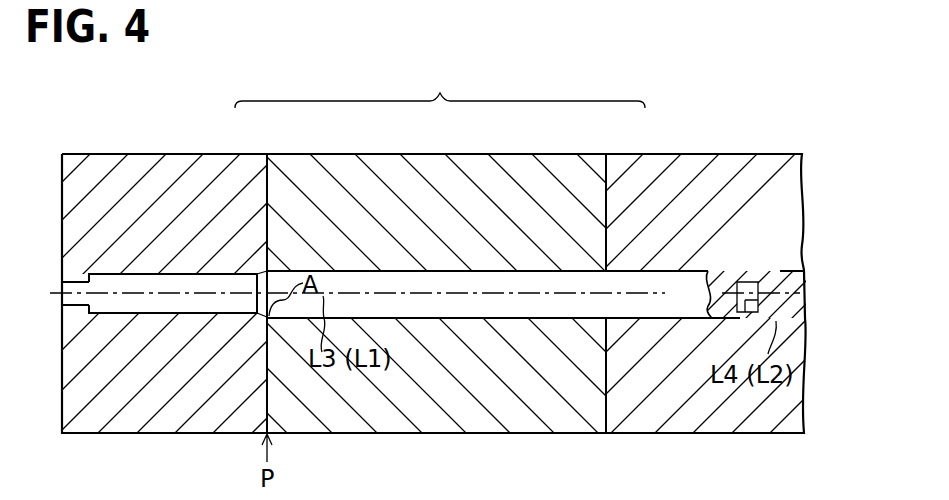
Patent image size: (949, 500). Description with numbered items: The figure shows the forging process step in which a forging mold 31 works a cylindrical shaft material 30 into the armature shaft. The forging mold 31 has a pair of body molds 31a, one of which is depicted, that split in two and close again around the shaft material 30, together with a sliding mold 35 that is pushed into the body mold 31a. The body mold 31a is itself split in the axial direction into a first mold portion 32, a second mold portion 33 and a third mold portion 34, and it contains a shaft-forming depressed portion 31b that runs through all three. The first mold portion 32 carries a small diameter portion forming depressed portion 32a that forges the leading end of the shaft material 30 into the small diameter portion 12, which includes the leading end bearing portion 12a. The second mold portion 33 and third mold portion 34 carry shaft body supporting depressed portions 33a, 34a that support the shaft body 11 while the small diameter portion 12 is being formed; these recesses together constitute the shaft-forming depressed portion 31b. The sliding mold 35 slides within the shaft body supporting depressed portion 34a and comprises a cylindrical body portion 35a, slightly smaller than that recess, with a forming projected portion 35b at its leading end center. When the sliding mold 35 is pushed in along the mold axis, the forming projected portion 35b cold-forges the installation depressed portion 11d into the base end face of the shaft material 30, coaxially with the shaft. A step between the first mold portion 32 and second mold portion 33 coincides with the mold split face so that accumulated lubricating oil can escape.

The forging mold 31 is at (754, 120).
The body mold 31a is at (440, 84).
The first mold portion 32 is at (256, 153).
The second mold portion 33 is at (445, 154).
The third mold portion 34 is at (627, 154).
The small diameter portion 12 is at (189, 315).
The leading end bearing portion 12a is at (74, 310).
The small diameter portion forming depressed portion 32a is at (137, 275).
The shaft body supporting depressed portion 33a is at (343, 272).
The shaft body 11 is at (443, 320).
The shaft-forming depressed portion 31b is at (498, 321).
The shaft material 30 is at (524, 262).
The shaft body supporting depressed portion 34a is at (637, 270).
The sliding mold 35 is at (784, 270).
The body portion 35a is at (804, 272).
The forming projected portion 35b is at (726, 319).
The installation depressed portion 11d is at (747, 282).